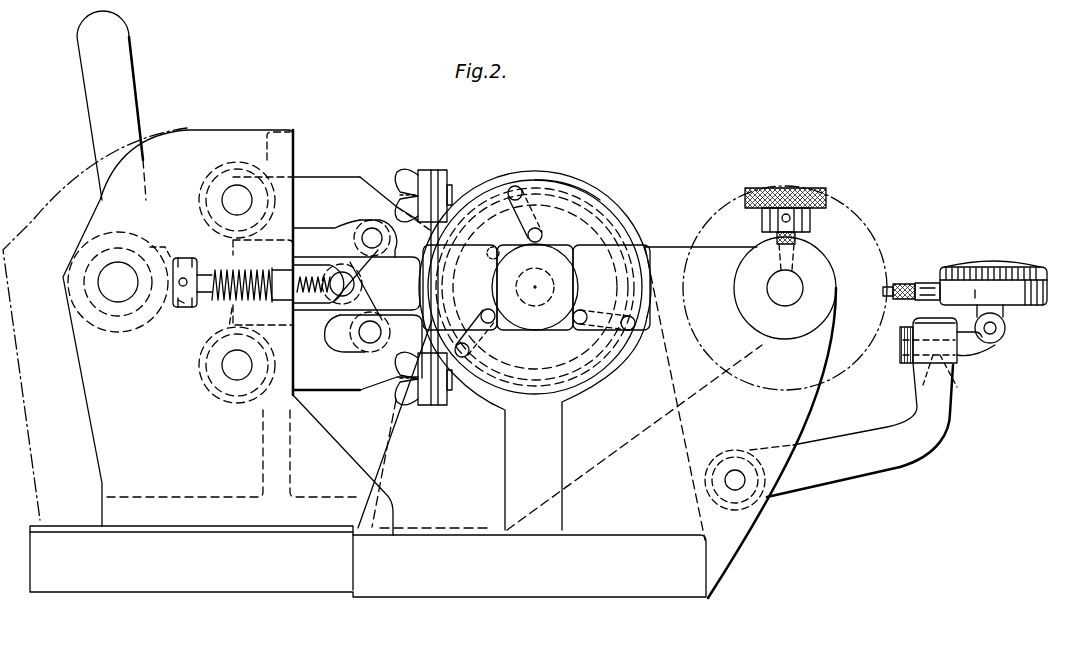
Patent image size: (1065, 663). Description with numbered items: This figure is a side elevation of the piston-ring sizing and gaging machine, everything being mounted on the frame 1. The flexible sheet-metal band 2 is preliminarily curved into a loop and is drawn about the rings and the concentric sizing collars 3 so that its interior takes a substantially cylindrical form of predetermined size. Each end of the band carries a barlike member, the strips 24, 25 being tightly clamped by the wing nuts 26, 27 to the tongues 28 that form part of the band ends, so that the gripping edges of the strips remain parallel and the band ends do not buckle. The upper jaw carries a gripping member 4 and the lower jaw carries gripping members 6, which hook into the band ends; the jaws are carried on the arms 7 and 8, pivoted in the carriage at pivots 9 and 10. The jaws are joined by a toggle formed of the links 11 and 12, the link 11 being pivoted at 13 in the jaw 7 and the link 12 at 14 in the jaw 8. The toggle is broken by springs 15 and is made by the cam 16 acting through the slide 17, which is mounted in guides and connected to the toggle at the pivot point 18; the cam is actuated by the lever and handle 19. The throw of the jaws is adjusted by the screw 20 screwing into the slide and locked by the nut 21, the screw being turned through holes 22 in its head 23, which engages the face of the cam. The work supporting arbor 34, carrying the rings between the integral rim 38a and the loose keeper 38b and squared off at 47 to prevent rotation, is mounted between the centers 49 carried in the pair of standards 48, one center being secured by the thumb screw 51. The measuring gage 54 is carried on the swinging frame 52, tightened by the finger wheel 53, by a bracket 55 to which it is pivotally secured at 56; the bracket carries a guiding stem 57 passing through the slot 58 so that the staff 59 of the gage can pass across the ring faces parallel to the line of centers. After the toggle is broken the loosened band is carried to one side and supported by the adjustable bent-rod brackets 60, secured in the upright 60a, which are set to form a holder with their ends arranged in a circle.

The frame 1 is at (470, 585).
The band 2 is at (573, 186).
The sizing collar 3 is at (612, 235).
The gripping member 4 is at (395, 200).
The gripping member 6 is at (390, 383).
The arm 7 is at (307, 188).
The arm 8 is at (315, 387).
The pivot 9 is at (237, 187).
The pivot 10 is at (228, 364).
The link 11 is at (372, 276).
The link 12 is at (376, 302).
The pivot 13 is at (368, 230).
The pivot 14 is at (365, 343).
The spring 15 is at (318, 276).
The cam 16 is at (171, 255).
The slide 17 is at (224, 310).
The pivot point 18 is at (341, 300).
The lever and handle 19 is at (120, 80).
The screw 20 is at (202, 266).
The nut 21 is at (232, 252).
The hole 22 is at (172, 283).
The head 23 is at (183, 305).
The strip 24 is at (445, 180).
The strip 25 is at (431, 175).
The wing nut 26 is at (405, 175).
The wing nut 27 is at (405, 405).
The tongue 28 is at (448, 232).
The arbor 34 is at (547, 313).
The rim 38a is at (578, 244).
The loose keeper 38b is at (497, 215).
The squared end 47 is at (560, 268).
The standard 48 is at (726, 246).
The center 49 is at (790, 290).
The thumb screw 51 is at (808, 190).
The swinging frame 52 is at (822, 470).
The finger wheel 53 is at (735, 455).
The gage 54 is at (1028, 265).
The bracket 55 is at (1002, 358).
The pivot 56 is at (1006, 330).
The guiding stem 57 is at (918, 370).
The slot 58 is at (960, 382).
The staff 59 is at (907, 284).
The bracket 60 is at (533, 203).
The upright 60a is at (552, 172).